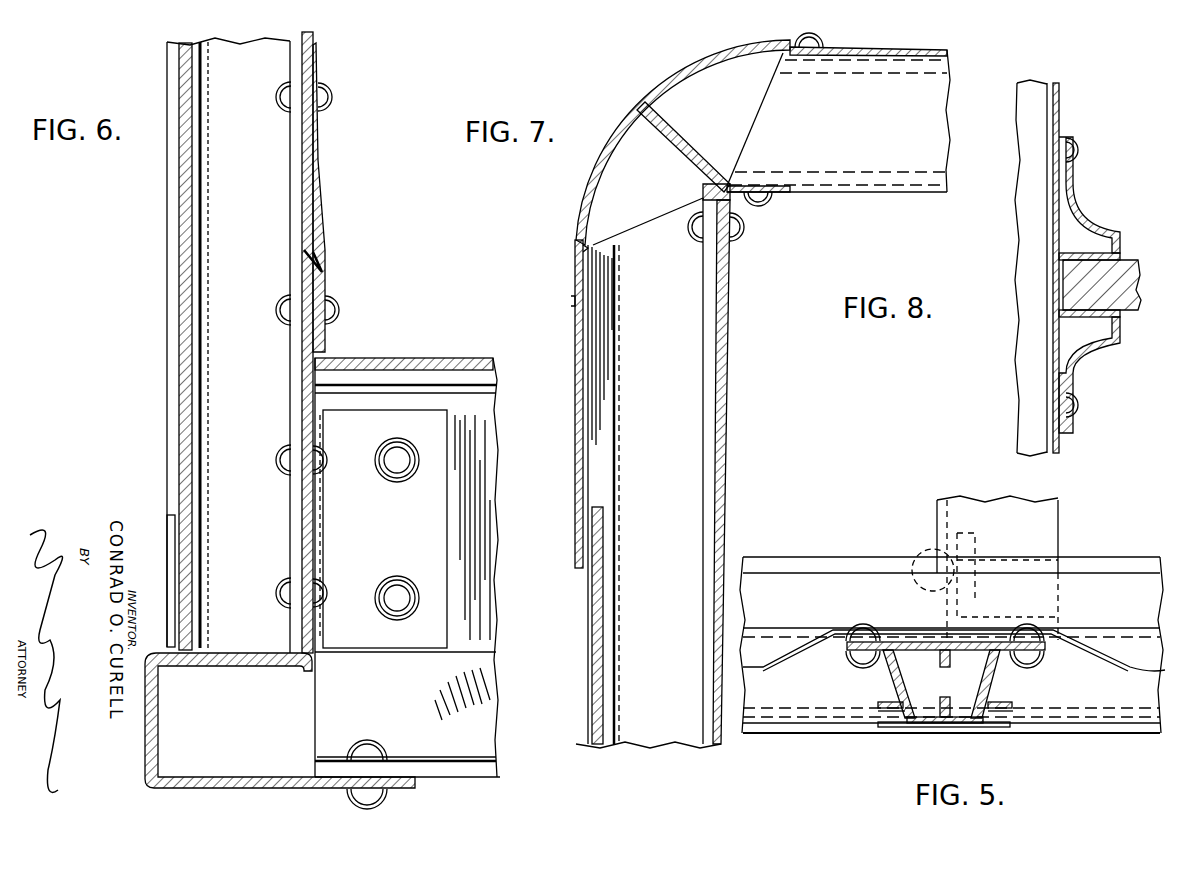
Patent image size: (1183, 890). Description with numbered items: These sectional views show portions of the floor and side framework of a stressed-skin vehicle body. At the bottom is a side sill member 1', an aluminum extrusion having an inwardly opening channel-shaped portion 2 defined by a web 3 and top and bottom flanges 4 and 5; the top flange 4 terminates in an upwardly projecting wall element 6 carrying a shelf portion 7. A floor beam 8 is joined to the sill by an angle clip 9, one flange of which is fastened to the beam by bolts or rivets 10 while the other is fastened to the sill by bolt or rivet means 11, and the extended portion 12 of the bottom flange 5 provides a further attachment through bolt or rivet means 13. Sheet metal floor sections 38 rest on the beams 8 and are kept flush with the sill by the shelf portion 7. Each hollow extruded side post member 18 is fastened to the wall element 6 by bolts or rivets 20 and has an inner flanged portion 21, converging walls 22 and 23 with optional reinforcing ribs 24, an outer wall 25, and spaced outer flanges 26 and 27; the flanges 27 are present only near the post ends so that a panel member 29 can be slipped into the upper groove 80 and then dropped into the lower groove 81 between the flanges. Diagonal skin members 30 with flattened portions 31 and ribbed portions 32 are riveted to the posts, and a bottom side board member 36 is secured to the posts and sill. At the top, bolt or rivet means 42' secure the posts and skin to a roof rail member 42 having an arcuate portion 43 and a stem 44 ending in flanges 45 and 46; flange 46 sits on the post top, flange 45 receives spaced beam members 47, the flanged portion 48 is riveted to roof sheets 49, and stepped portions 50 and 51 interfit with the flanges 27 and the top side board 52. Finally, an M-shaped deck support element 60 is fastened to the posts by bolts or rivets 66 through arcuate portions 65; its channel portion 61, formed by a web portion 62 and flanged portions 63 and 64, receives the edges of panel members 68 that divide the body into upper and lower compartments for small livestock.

In FIG. 6, the side sill member 1' is at (280, 720).
In FIG. 5, the side sill member 1' is at (951, 746).
In FIG. 6, the channel-shaped portion 2 is at (318, 700).
In FIG. 6, the web 3 is at (158, 690).
In FIG. 5, the web 3 is at (1095, 733).
In FIG. 6, the top flange 4 is at (248, 666).
In FIG. 6, the bottom flange 5 is at (262, 777).
In FIG. 6, the wall element 6 is at (313, 420).
In FIG. 5, the wall element 6 is at (835, 648).
In FIG. 6, the shelf portion 7 is at (353, 358).
In FIG. 6, the floor beam 8 is at (497, 480).
In FIG. 7, the floor beam 8 is at (515, 480).
In FIG. 5, the floor beam 8 is at (1058, 514).
In FIG. 6, the angle clip 9 is at (447, 609).
In FIG. 5, the angle clip 9 is at (955, 600).
In FIG. 6, the bolts or rivets 10 is at (397, 482).
In FIG. 5, the bolts or rivets 10 is at (930, 552).
In FIG. 6, the bolt or rivet means 11 is at (276, 462).
In FIG. 6, the extended portion 12 is at (415, 788).
In FIG. 5, the extended portion 12 is at (808, 557).
In FIG. 6, the bolt or rivet means 13 is at (384, 752).
In FIG. 6, the side post member 18 is at (165, 600).
In FIG. 7, the side post member 18 is at (572, 510).
In FIG. 8, the side post member 18 is at (1030, 395).
In FIG. 5, the side post member 18 is at (1002, 676).
In FIG. 6, the bolts or rivets 20 is at (340, 310).
In FIG. 5, the bolts or rivets 20 is at (863, 630).
In FIG. 6, the inner flanged portion 21 is at (302, 537).
In FIG. 7, the inner flanged portion 21 is at (713, 405).
In FIG. 8, the inner flanged portion 21 is at (1062, 113).
In FIG. 5, the inner flanged portion 21 is at (908, 642).
In FIG. 5, the converging wall 22 is at (892, 672).
In FIG. 6, the converging wall 23 is at (228, 345).
In FIG. 7, the converging wall 23 is at (648, 473).
In FIG. 5, the converging wall 23 is at (992, 692).
In FIG. 5, the reinforcing rib 24 is at (935, 683).
In FIG. 5, the outer wall 25 is at (950, 724).
In FIG. 6, the outer flange 26 is at (200, 490).
In FIG. 7, the outer flange 26 is at (616, 400).
In FIG. 5, the outer flange 26 is at (880, 704).
In FIG. 6, the outer flange 27 is at (168, 566).
In FIG. 7, the outer flange 27 is at (586, 397).
In FIG. 5, the outer flange 27 is at (890, 714).
In FIG. 6, the panel member 29 is at (179, 434).
In FIG. 7, the panel member 29 is at (600, 650).
In FIG. 5, the panel member 29 is at (772, 725).
In FIG. 6, the diagonal member 30 is at (316, 160).
In FIG. 7, the diagonal member 30 is at (727, 355).
In FIG. 8, the diagonal member 30 is at (1064, 90).
In FIG. 5, the diagonal member 30 is at (790, 625).
In FIG. 6, the flattened portion 31 is at (318, 80).
In FIG. 7, the flattened portion 31 is at (722, 466).
In FIG. 5, the flattened portion 31 is at (887, 630).
In FIG. 5, the channel-shaped ribbed portion 32 is at (766, 645).
In FIG. 6, the bottom side board member 36 is at (324, 250).
In FIG. 6, the floor section 38 is at (462, 358).
In FIG. 7, the roof rail member 42 is at (624, 69).
In FIG. 7, the bolt or rivet means 42' is at (747, 221).
In FIG. 7, the arcuate portion 43 is at (722, 64).
In FIG. 7, the stem 44 is at (662, 135).
In FIG. 7, the flange 45 is at (760, 185).
In FIG. 7, the flange 46 is at (732, 252).
In FIG. 7, the beam member 47 is at (885, 192).
In FIG. 7, the flanged portion 48 is at (830, 60).
In FIG. 7, the roof sheet 49 is at (913, 60).
In FIG. 7, the stepped portion 50 is at (578, 257).
In FIG. 7, the stepped portion 51 is at (573, 308).
In FIG. 7, the top side board 52 is at (575, 350).
In FIG. 8, the deck support element 60 is at (1090, 348).
In FIG. 8, the channel portion 61 is at (1060, 313).
In FIG. 8, the web portion 62 is at (1070, 276).
In FIG. 8, the flanged portion 63 is at (1085, 253).
In FIG. 8, the flanged portion 64 is at (1120, 320).
In FIG. 8, the arcuate portion 65 is at (1072, 215).
In FIG. 8, the bolts or rivets 66 is at (1075, 148).
In FIG. 8, the panel member 68 is at (1132, 258).
In FIG. 7, the groove 80 is at (605, 468).
In FIG. 6, the groove 81 is at (170, 530).
In FIG. 5, the groove 81 is at (880, 730).